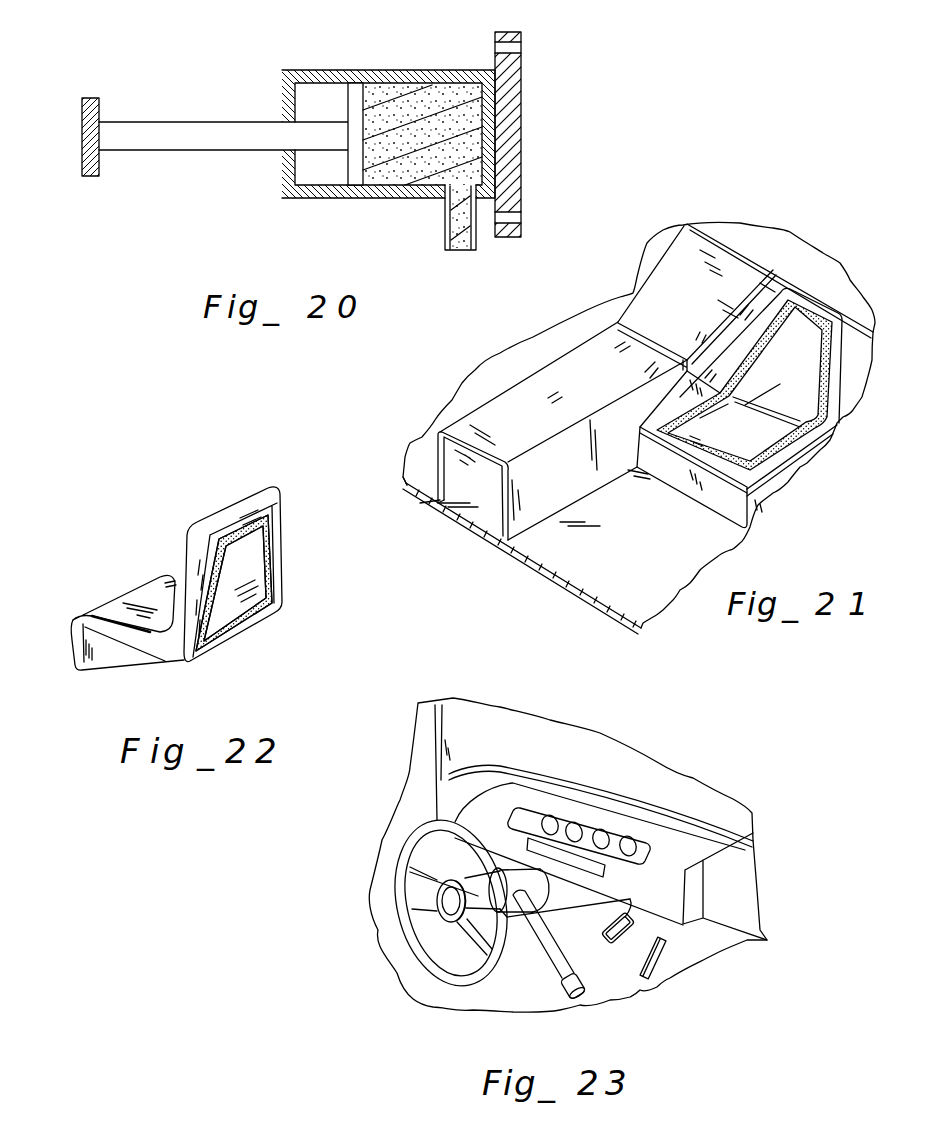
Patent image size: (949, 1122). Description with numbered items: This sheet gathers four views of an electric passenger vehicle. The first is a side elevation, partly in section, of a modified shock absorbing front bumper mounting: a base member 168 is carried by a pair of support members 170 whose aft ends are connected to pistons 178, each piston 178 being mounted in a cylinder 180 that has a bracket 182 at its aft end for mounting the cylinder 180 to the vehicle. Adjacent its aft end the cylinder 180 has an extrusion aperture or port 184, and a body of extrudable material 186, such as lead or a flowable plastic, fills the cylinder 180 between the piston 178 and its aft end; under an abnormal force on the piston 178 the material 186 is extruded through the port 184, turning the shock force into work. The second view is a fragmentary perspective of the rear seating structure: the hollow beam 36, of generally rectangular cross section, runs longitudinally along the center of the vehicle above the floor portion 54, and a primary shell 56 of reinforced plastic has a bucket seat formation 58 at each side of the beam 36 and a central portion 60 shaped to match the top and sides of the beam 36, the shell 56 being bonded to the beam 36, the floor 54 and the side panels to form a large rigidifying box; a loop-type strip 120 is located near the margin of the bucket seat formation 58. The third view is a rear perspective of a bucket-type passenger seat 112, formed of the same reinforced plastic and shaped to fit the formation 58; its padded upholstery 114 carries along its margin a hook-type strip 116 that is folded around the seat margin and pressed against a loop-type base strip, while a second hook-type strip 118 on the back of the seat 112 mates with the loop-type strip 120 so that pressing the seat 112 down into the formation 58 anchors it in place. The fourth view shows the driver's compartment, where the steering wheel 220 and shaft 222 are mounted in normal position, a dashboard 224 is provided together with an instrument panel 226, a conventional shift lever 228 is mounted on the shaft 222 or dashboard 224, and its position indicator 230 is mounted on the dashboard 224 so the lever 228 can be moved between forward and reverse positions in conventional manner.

In FIG. 20, the base member 168 is at (84, 133).
In FIG. 20, the support members 170 is at (213, 130).
In FIG. 20, the piston 178 is at (357, 170).
In FIG. 20, the cylinder 180 is at (403, 78).
In FIG. 20, the bracket 182 is at (527, 131).
In FIG. 20, the extrusion aperture or port 184 is at (447, 193).
In FIG. 20, the body of extrudable material 186 is at (393, 173).
In FIG. 21, the primary shell 56 is at (731, 219).
In FIG. 21, the bucket seat formation 58 is at (796, 408).
In FIG. 21, the central portion 60 is at (617, 394).
In FIG. 21, the floor portion 54 is at (668, 542).
In FIG. 21, the hollow beam 36 is at (534, 521).
In FIG. 21, the loop-type strip 120 is at (795, 383).
In FIG. 22, the passenger seat 112 is at (250, 554).
In FIG. 22, the padded upholstery 114 is at (117, 608).
In FIG. 22, the hook-type strip 116 is at (196, 530).
In FIG. 22, the second hook-type strip 118 is at (270, 607).
In FIG. 23, the steering wheel 220 is at (408, 922).
In FIG. 23, the shaft 222 is at (540, 900).
In FIG. 23, the dashboard 224 is at (687, 870).
In FIG. 23, the gear indicator 226 is at (567, 815).
In FIG. 23, the shift lever 228 is at (557, 974).
In FIG. 23, the position indicator 230 is at (605, 870).